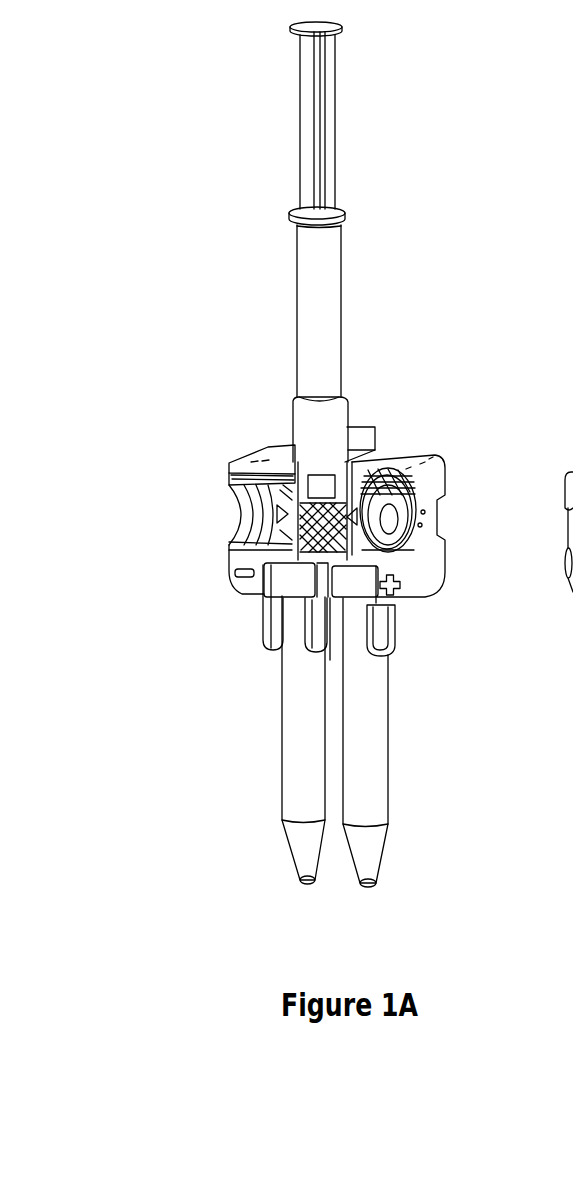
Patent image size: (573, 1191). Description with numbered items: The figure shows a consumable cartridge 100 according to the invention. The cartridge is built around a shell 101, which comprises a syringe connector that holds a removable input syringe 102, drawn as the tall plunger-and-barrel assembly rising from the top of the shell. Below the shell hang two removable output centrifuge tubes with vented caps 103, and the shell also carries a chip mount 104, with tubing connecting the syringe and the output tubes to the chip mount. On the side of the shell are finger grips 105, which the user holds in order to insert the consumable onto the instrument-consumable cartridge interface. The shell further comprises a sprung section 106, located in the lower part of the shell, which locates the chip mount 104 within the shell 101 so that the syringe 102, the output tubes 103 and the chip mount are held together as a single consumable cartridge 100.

The consumable cartridge 100 is at (132, 504).
The shell 101 is at (435, 456).
The removable input syringe 102 is at (327, 258).
The removable output centrifuge tubes with vented caps 103 is at (309, 858).
The chip mount 104 is at (402, 572).
The finger grips 105 is at (238, 532).
The sprung section 106 is at (280, 560).